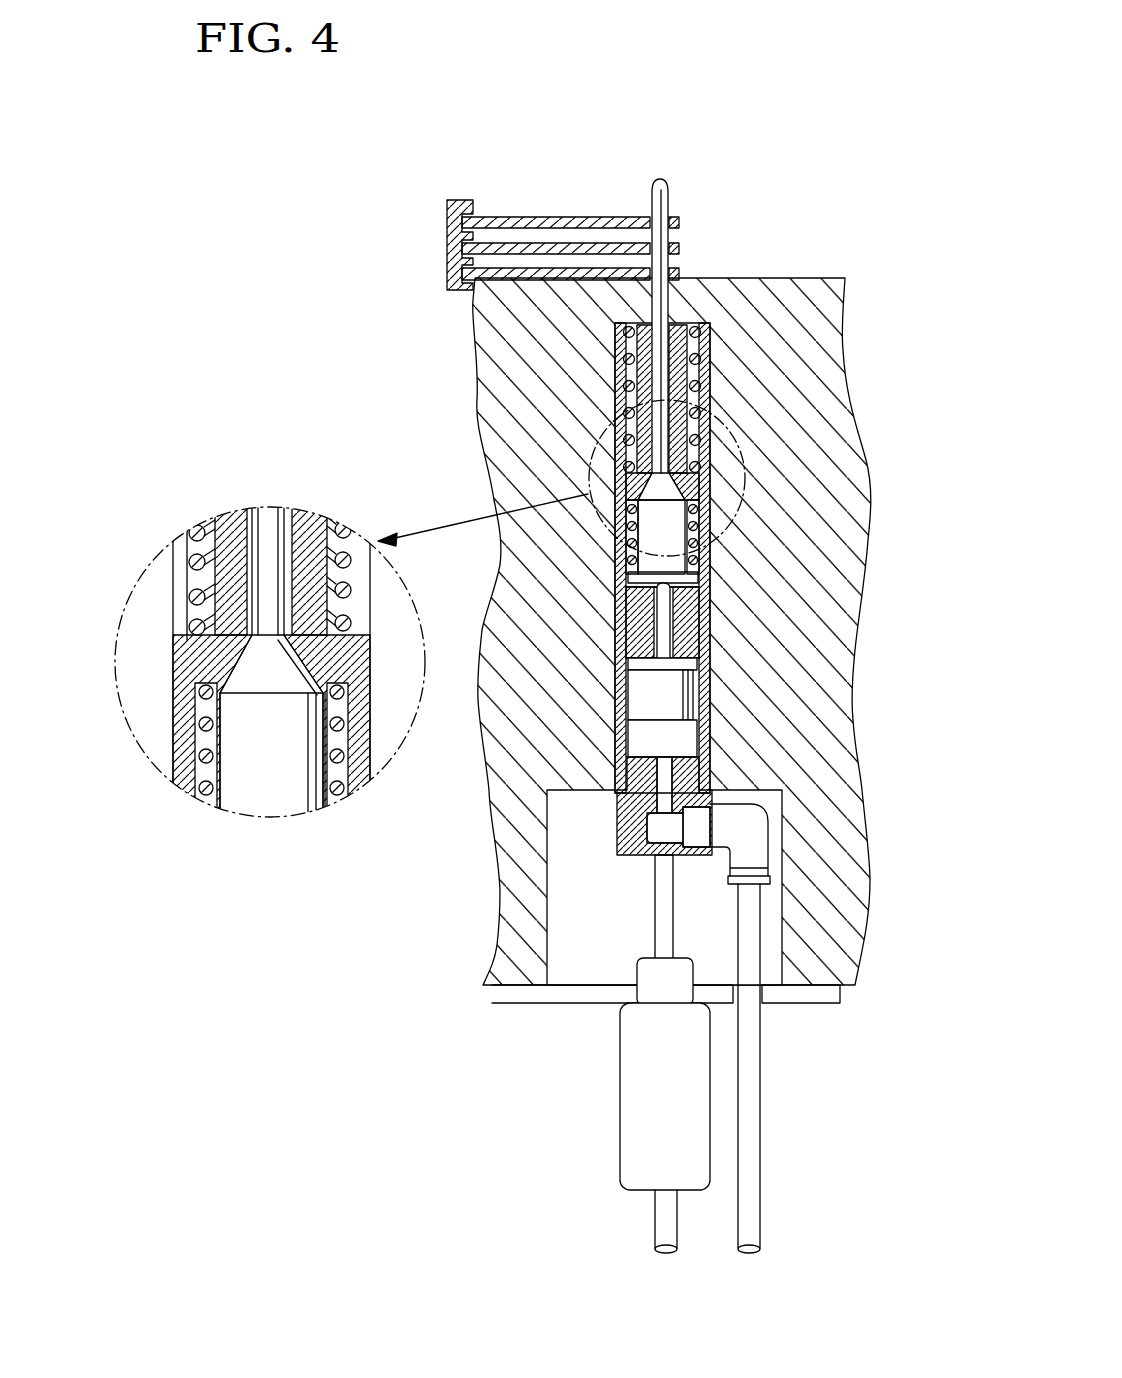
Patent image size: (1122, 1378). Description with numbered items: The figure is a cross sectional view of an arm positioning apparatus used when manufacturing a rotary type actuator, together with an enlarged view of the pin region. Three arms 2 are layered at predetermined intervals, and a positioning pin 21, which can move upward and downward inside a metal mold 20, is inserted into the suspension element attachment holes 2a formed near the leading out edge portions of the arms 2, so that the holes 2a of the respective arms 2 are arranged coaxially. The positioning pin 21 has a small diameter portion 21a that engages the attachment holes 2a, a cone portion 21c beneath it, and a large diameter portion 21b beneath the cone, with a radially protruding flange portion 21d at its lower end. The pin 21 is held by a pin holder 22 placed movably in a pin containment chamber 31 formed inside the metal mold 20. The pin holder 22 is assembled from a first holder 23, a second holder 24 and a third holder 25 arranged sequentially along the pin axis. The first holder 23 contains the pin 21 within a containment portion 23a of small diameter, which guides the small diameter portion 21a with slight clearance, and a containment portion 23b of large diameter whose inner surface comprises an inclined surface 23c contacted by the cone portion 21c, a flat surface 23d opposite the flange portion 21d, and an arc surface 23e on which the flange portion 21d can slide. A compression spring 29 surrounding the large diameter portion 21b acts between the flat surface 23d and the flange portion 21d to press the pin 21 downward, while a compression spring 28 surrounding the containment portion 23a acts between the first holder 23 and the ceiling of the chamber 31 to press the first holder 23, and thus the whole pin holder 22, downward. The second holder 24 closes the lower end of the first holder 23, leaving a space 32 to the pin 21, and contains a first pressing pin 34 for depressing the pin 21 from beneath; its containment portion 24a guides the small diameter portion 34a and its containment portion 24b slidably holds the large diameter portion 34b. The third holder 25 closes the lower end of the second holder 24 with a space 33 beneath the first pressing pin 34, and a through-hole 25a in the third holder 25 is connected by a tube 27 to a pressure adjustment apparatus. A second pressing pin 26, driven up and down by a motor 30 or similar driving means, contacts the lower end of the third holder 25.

The arm 2 is at (578, 224).
The suspension element attachment hole 2a is at (652, 205).
The metal mold 20 is at (786, 304).
The positioning pin 21 is at (668, 200).
The small diameter portion 21a is at (640, 328).
The large diameter portion 21b is at (692, 500).
The cone portion 21c is at (652, 452).
The flange portion 21d is at (640, 558).
The pin holder 22 is at (712, 452).
The first holder 23 is at (700, 520).
The containment portion having a small diameter 23a is at (688, 332).
The containment portion having a large diameter 23b is at (698, 572).
The inclined surface 23c is at (197, 525).
The flat surface 23d is at (205, 692).
The arc surface 23e is at (203, 742).
The second holder 24 is at (672, 680).
The containment portion of the small diameter 24a is at (652, 692).
The containment portion of the large diameter 24b is at (625, 778).
The third holder 25 is at (715, 838).
The through-hole 25a is at (657, 827).
The second pressing pin 26 is at (666, 898).
The tube 27 is at (750, 1065).
The compression spring 28 is at (624, 360).
The compression spring 29 is at (610, 483).
The motor 30 is at (640, 1045).
The pin containment chamber 31 is at (712, 349).
The space 32 is at (708, 592).
The space 33 is at (700, 735).
The first pressing pin 34 is at (700, 640).
The small diameter portion 34a is at (632, 607).
The large diameter portion 34b is at (622, 742).